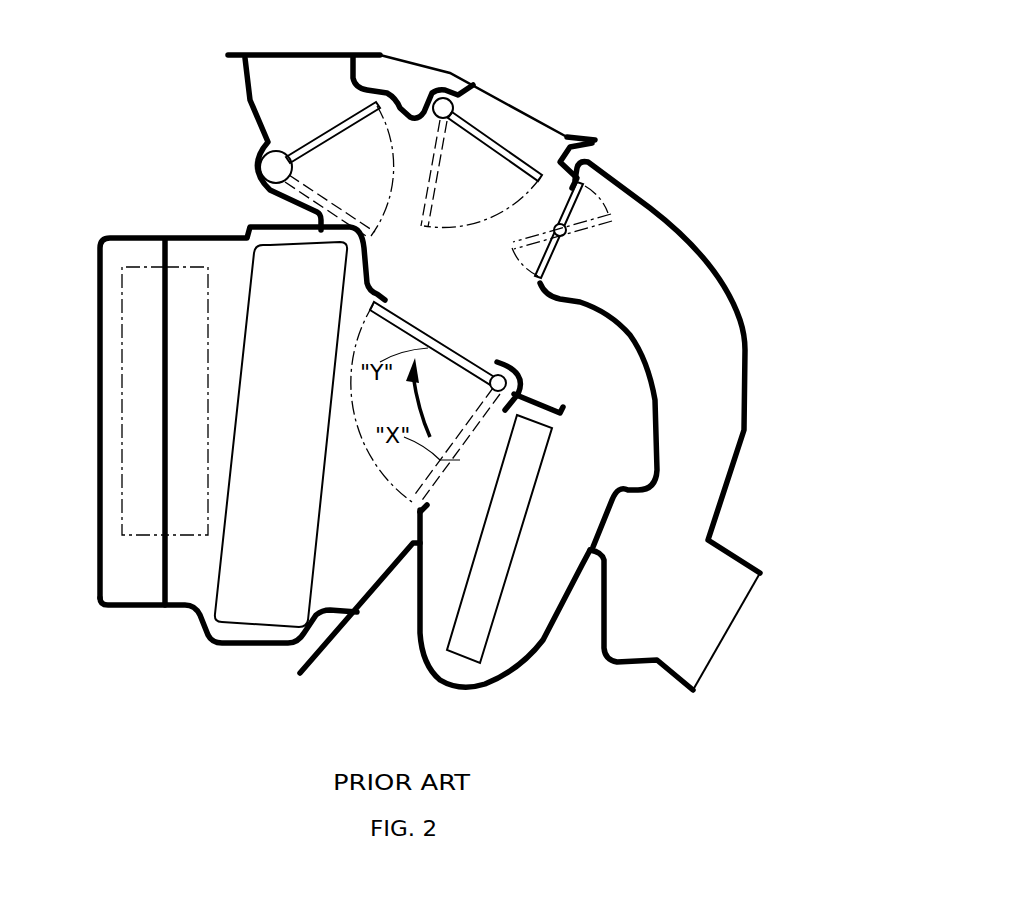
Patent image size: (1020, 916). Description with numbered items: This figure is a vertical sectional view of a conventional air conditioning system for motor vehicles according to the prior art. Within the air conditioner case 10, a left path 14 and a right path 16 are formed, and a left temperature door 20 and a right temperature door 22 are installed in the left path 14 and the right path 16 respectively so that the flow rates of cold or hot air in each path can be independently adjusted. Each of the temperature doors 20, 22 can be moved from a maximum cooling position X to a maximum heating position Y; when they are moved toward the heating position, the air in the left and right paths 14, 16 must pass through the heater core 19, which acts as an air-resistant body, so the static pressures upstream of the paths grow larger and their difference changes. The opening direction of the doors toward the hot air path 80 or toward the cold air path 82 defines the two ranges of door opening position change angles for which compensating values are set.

The air conditioner case 10 is at (190, 237).
The left path 14 is at (145, 408).
The right path 16 is at (208, 406).
The heater core 19 is at (490, 600).
The left temperature door 20 is at (418, 332).
The right temperature door 22 is at (428, 388).
The hot air path 80 is at (460, 457).
The cold air path 82 is at (470, 343).